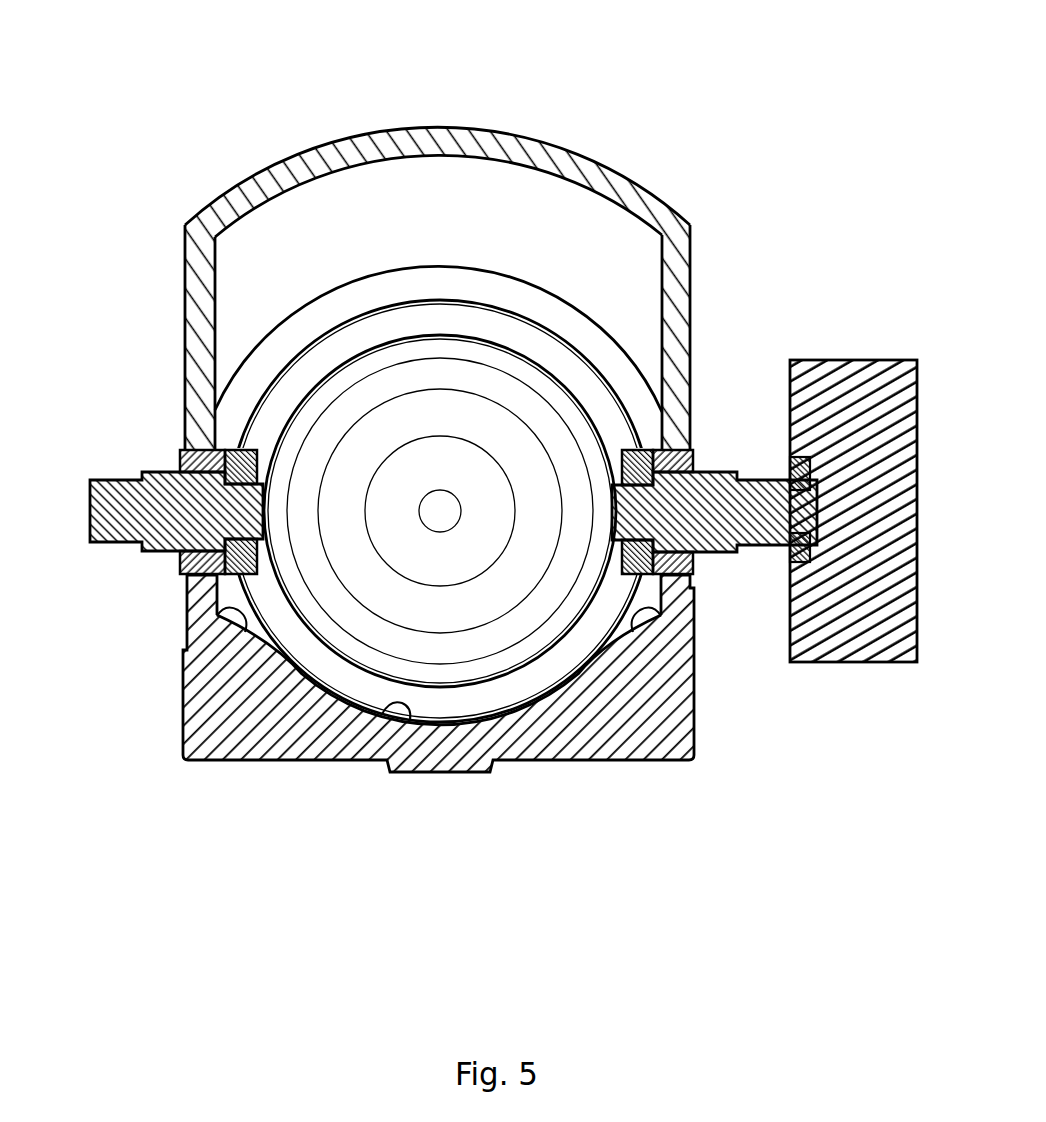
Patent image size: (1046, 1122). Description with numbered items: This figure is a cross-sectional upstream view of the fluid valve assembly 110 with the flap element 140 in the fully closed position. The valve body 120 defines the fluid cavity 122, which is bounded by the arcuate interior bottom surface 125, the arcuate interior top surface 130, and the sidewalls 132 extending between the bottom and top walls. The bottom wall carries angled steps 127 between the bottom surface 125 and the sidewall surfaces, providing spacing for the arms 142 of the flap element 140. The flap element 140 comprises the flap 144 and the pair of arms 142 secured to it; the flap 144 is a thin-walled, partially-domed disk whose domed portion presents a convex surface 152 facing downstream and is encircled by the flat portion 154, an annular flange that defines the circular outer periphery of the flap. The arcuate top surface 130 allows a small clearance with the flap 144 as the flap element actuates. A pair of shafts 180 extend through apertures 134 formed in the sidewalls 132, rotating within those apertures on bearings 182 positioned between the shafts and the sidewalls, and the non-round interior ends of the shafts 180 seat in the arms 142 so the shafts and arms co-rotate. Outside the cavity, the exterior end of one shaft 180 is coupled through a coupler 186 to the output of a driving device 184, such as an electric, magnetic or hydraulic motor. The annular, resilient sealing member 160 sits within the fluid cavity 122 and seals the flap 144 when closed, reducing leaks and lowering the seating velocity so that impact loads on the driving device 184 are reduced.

The fluid valve assembly 110 is at (507, 95).
The valve body 120 is at (594, 157).
The fluid cavity 122 is at (470, 222).
The interior bottom surface 125 is at (404, 721).
The angled steps 127 is at (186, 636).
The arcuate interior top surface 130 is at (288, 195).
The sidewalls 132 is at (193, 330).
The apertures 134 is at (186, 566).
The flap element 140 is at (522, 718).
The arms 142 is at (236, 450).
The flap 144 is at (288, 676).
The convex surface 152 is at (352, 627).
The flat portion 154 is at (304, 316).
The sealing member 160 is at (572, 316).
The shafts 180 is at (133, 480).
The bearings 182 is at (183, 452).
The driving device 184 is at (876, 370).
The coupler 186 is at (788, 548).